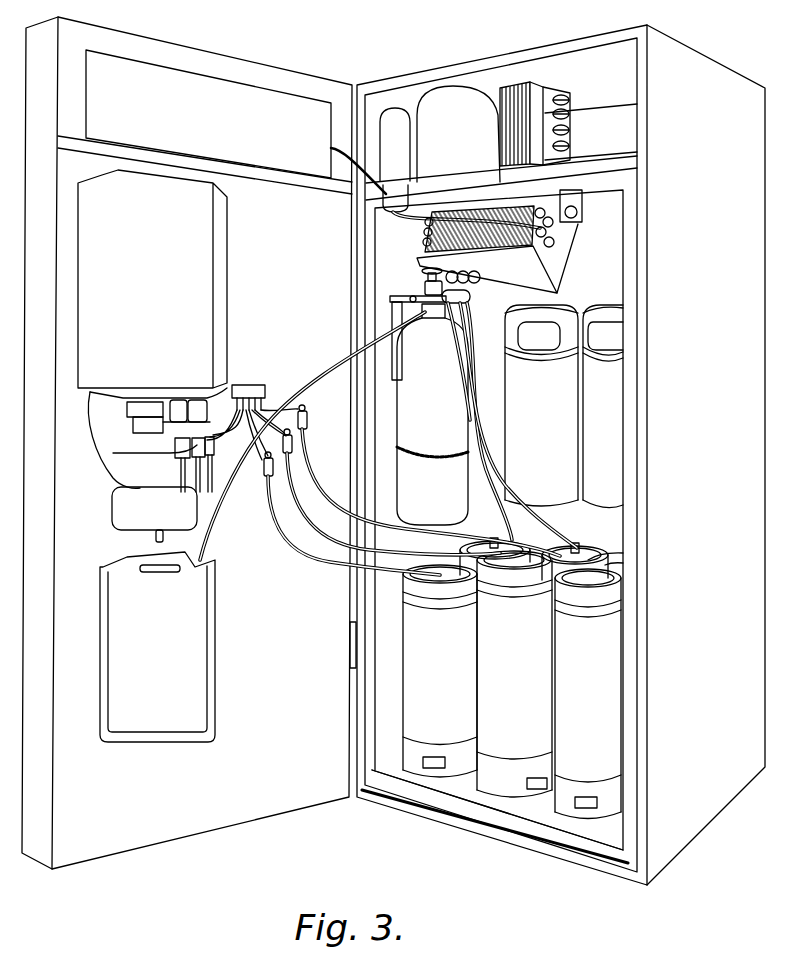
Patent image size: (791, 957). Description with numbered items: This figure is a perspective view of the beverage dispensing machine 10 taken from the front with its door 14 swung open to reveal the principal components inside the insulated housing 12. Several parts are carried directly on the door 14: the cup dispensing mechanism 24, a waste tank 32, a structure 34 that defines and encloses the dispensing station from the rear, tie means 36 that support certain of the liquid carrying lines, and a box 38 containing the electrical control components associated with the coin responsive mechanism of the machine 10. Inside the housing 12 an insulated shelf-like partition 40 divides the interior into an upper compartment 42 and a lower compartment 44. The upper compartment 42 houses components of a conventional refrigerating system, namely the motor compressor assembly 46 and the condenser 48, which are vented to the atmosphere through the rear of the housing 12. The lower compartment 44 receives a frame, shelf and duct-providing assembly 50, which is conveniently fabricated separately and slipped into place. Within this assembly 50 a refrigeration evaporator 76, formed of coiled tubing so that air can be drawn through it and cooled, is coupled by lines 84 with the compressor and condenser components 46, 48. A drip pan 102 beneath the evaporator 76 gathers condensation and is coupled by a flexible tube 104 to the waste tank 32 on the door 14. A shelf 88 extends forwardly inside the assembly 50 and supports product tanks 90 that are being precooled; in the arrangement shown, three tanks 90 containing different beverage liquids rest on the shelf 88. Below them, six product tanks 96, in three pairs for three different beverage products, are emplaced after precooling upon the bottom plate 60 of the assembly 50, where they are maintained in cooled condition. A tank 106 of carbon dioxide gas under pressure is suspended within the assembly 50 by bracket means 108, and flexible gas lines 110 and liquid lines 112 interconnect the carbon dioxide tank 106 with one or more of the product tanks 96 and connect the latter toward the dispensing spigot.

The machine 10 is at (413, 73).
The insulated housing 12 is at (712, 84).
The door 14 is at (290, 78).
The cup dispensing mechanism 24 is at (205, 278).
The waste tank 32 is at (200, 666).
The structure for defining and enclosing the dispensing station 34 is at (118, 508).
The tie means 36 is at (250, 385).
The box containing electrical control components 38 is at (190, 82).
The insulated shelf-like partition 40 is at (614, 162).
The upper compartment 42 is at (508, 70).
The lower compartment 44 is at (612, 238).
The motor compressor assembly 46 is at (470, 98).
The condenser 48 is at (538, 96).
The frame, shelf and duct-providing assembly 50 is at (385, 769).
The bottom plate 60 is at (540, 812).
The refrigeration evaporator 76 is at (426, 240).
The lines 84 is at (390, 150).
The shelf 88 is at (615, 542).
The product tanks to be precooled 90 is at (615, 420).
The product tanks 96 is at (615, 680).
The drip pan 102 is at (545, 286).
The flexible tube 104 is at (320, 383).
The tank of carbon dioxide gas 106 is at (405, 467).
The bracket means 108 is at (424, 296).
The gas lines 110 is at (505, 478).
The liquid lines 112 is at (322, 502).